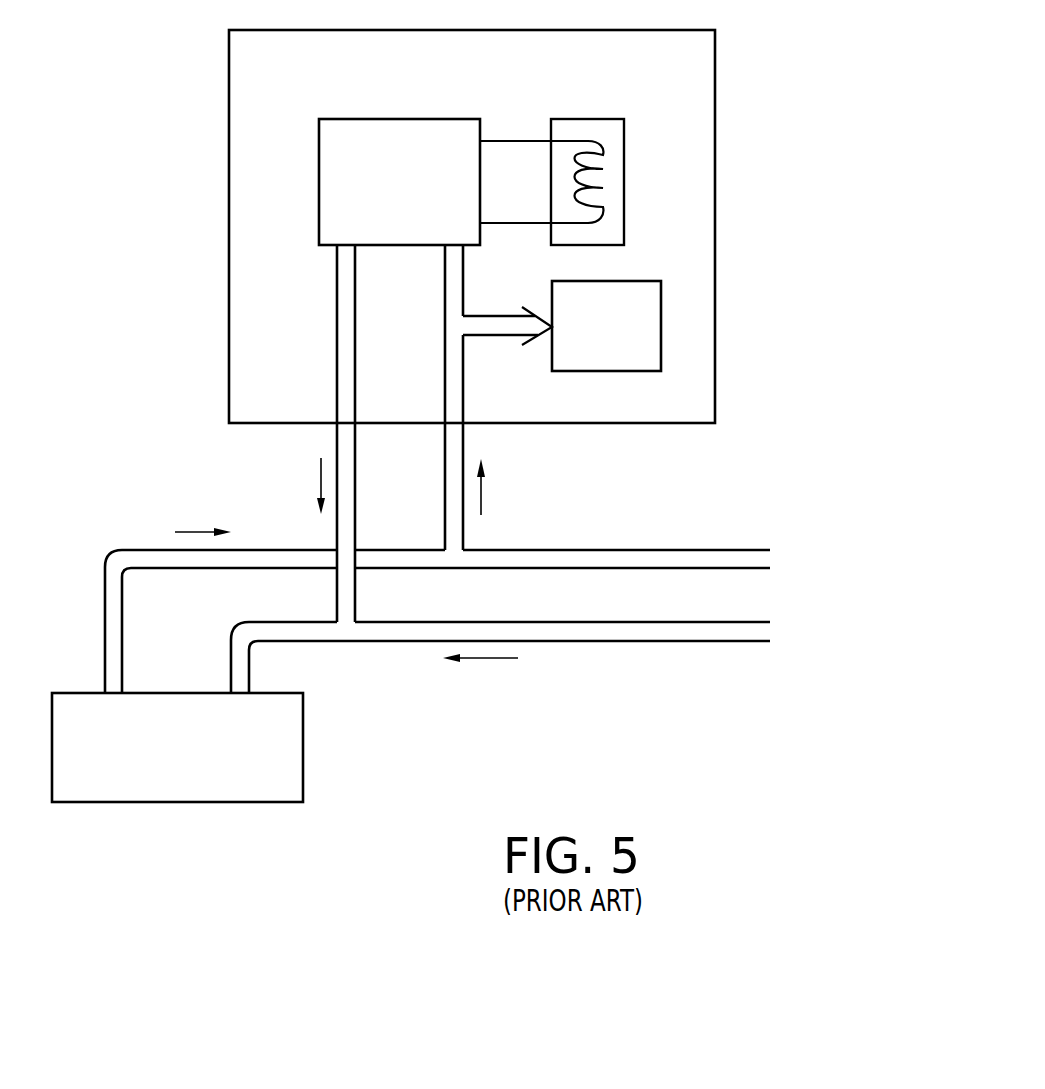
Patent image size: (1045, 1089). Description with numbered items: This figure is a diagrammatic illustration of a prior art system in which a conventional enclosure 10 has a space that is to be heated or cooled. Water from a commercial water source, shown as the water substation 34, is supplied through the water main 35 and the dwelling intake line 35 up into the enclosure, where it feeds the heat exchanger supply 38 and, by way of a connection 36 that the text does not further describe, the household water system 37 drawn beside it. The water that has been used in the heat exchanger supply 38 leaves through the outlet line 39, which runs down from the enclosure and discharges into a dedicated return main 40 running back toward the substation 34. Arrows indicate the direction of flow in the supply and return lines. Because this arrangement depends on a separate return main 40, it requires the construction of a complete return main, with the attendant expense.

The enclosure 10 is at (695, 68).
The substation 34 is at (303, 740).
The water main 35 is at (463, 379).
The branch conduit to heat sink 36 is at (490, 323).
The household water system 37 is at (647, 328).
The heat exchanger supply 38 is at (393, 138).
The outlet line 39 is at (345, 330).
The dedicated return main 40 is at (632, 630).